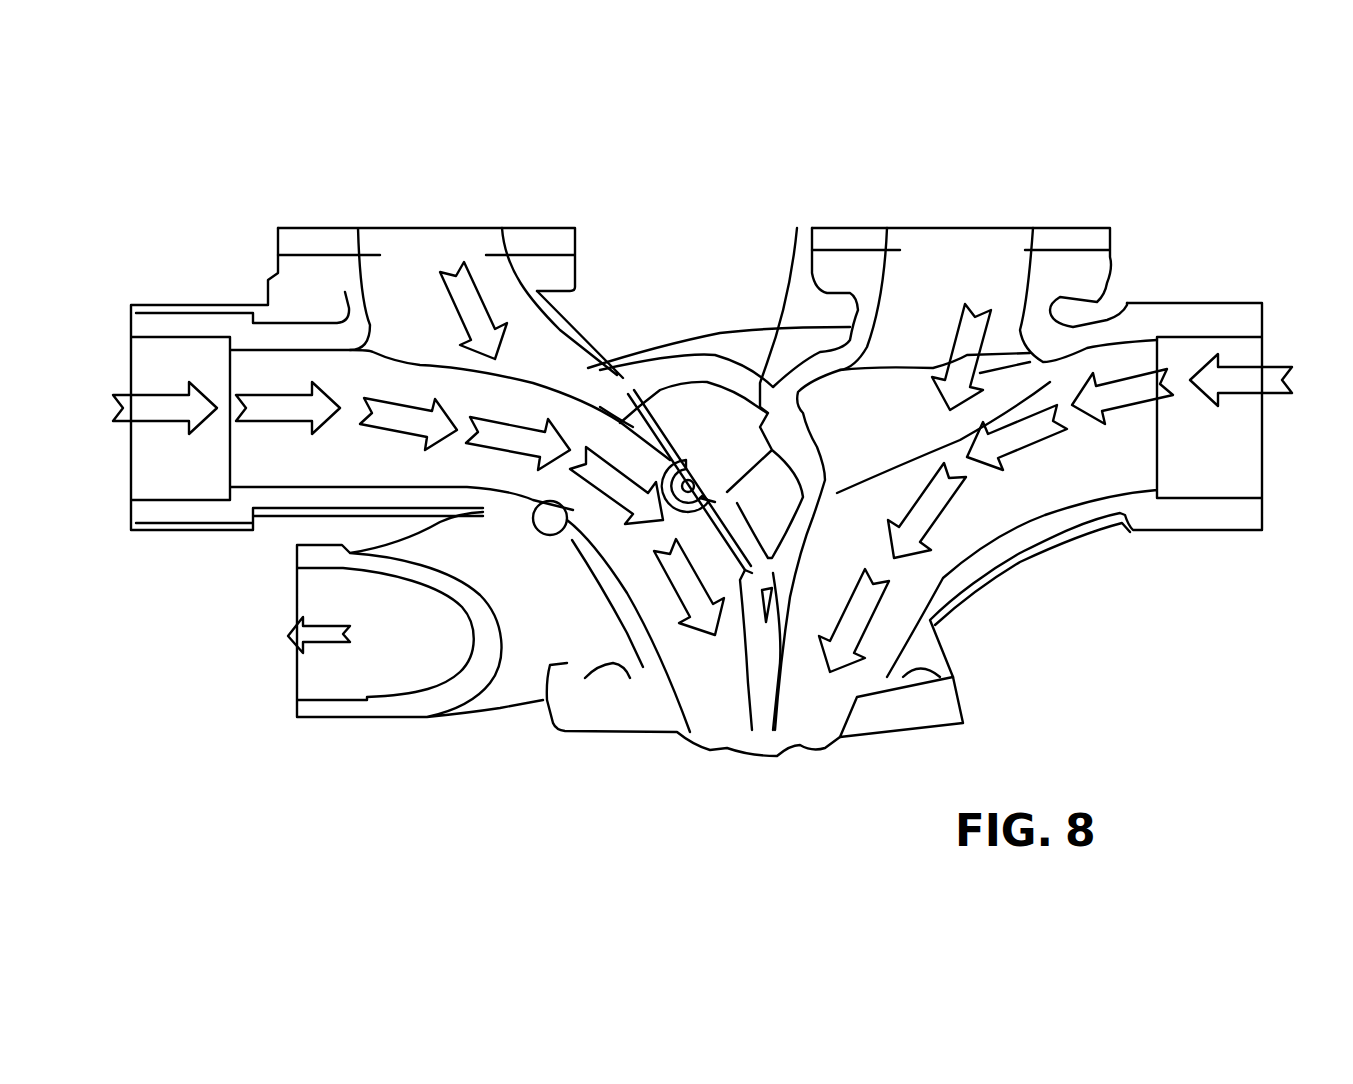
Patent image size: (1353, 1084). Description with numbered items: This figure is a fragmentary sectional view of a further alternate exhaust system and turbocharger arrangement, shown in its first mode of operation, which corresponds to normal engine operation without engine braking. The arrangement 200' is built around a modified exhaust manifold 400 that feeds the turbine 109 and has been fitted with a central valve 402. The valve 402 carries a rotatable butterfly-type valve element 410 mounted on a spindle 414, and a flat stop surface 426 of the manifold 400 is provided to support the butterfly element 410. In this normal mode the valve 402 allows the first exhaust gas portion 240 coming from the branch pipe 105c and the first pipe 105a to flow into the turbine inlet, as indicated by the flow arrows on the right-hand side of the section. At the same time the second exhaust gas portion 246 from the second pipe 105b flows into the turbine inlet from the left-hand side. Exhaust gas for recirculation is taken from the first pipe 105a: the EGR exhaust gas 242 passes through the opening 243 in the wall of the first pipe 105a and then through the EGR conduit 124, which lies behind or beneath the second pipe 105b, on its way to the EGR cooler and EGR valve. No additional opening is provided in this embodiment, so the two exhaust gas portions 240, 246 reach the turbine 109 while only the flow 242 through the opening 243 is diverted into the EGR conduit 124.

The first pipe 105a is at (1186, 515).
The second pipe 105b is at (225, 520).
The branch pipe 105c is at (1107, 260).
The turbine 109 is at (991, 688).
The EGR conduit 124 is at (425, 720).
The valve assembly 200' is at (688, 329).
The first exhaust gas portion 240 is at (1235, 385).
The EGR exhaust gas 242 is at (287, 650).
The opening 243 is at (813, 415).
The second exhaust gas portion 246 is at (452, 310).
The modified exhaust manifold 400 is at (657, 339).
The central valve 402 is at (734, 427).
The butterfly-type valve element 410 is at (662, 425).
The spindle 414 is at (689, 490).
The flat stop surface 426 is at (727, 545).